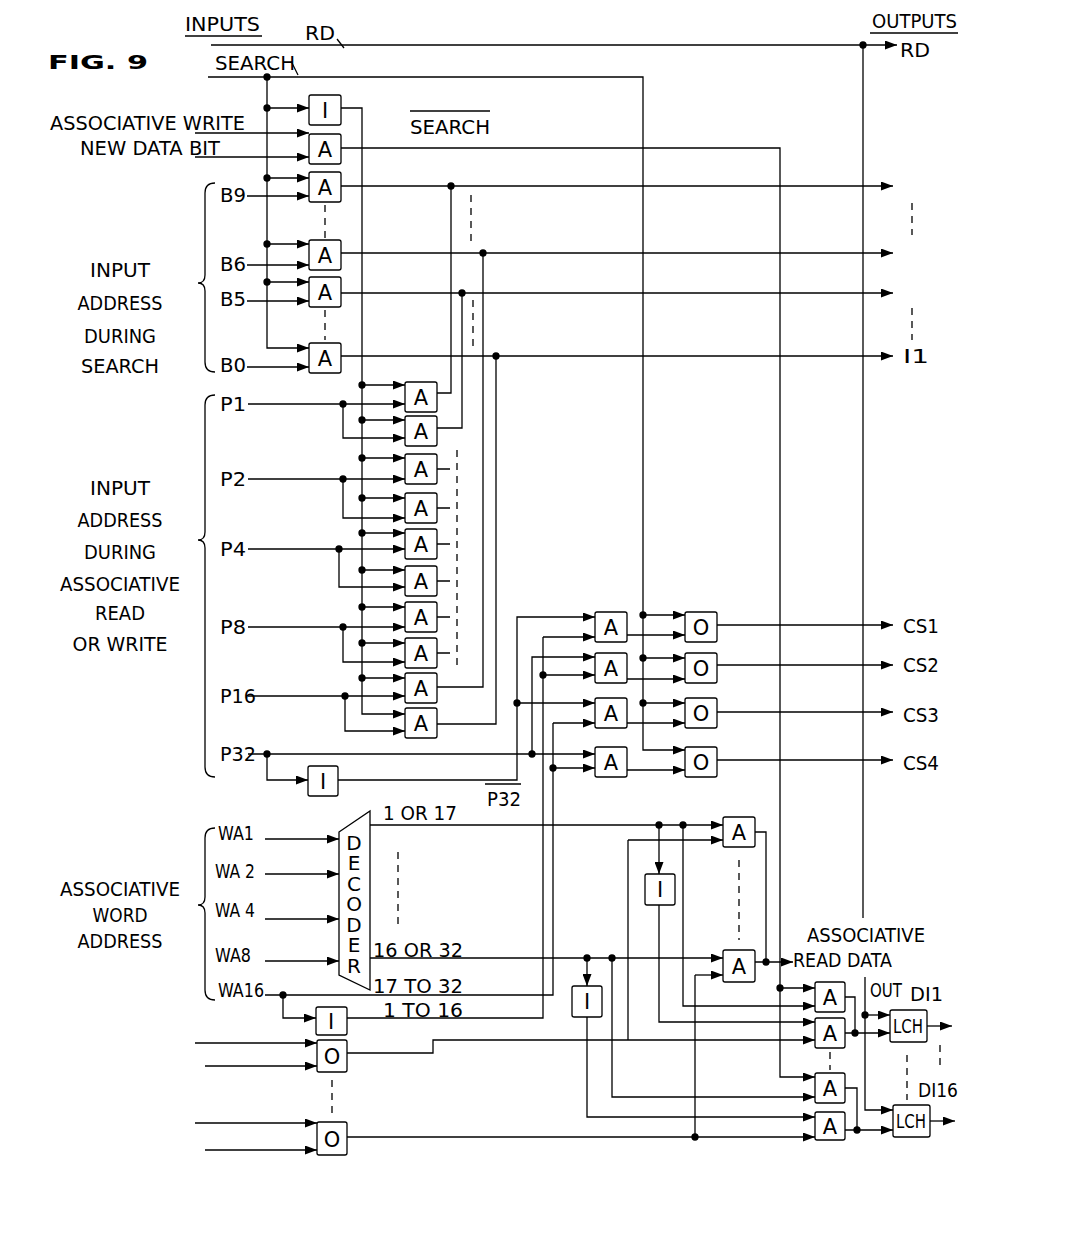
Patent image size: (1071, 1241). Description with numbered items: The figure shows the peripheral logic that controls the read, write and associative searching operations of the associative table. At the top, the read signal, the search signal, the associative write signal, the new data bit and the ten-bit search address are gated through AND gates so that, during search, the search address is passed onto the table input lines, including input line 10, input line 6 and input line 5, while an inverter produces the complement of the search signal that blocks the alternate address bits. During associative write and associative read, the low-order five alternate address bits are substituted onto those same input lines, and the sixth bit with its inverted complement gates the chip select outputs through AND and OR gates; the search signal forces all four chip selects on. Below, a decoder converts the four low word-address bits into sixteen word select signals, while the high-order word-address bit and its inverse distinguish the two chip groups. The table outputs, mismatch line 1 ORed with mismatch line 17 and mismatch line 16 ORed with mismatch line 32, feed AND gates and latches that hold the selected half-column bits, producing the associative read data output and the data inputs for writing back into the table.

The mismatch line 1 is at (189, 1039).
The mismatch line 17 is at (189, 1071).
The mismatch line 16 is at (189, 1123).
The mismatch line 32 is at (191, 1151).
The associative table input line 10 is at (640, 205).
The associative table input line 6 is at (637, 256).
The associative table input line 5 is at (637, 311).